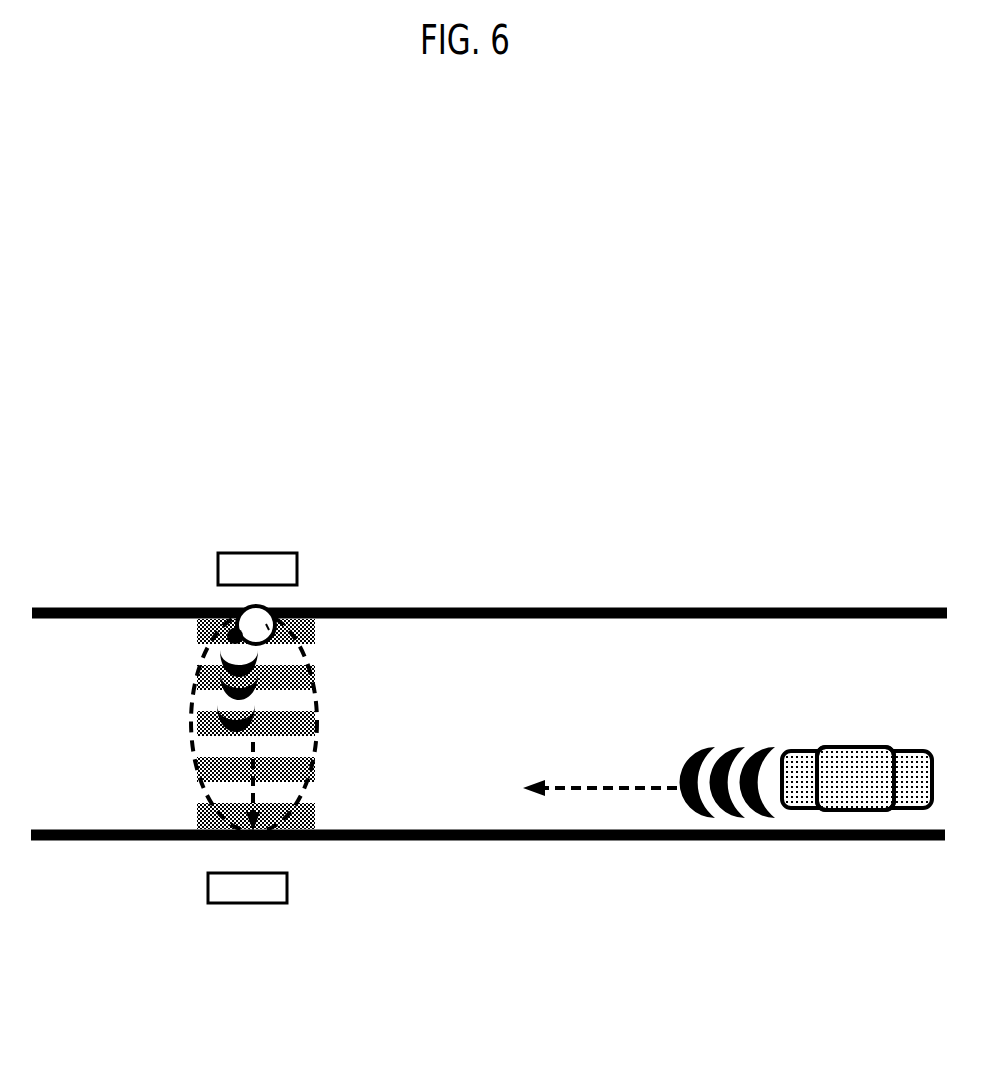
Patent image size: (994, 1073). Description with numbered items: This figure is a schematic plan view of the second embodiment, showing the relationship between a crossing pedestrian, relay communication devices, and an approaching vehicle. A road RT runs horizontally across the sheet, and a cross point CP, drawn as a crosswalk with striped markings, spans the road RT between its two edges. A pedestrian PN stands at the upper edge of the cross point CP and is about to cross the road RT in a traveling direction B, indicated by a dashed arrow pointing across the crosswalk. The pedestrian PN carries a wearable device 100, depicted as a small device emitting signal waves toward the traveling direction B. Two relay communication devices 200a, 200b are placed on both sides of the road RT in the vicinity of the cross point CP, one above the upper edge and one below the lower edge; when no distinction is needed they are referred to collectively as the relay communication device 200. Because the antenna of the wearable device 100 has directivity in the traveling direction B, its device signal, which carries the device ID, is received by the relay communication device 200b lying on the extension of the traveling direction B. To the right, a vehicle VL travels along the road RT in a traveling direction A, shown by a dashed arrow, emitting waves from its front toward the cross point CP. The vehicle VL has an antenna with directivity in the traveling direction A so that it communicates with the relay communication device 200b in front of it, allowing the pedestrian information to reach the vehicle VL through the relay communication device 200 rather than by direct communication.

The wearable device 100 is at (229, 612).
The relay communication device 200 is at (319, 705).
The relay communication device 200a is at (280, 553).
The relay communication device 200b is at (287, 890).
The road RT is at (82, 653).
The cross point CP is at (310, 649).
The pedestrian PN is at (287, 608).
The vehicle VL is at (832, 766).
The traveling direction A is at (600, 775).
The traveling direction B is at (263, 786).